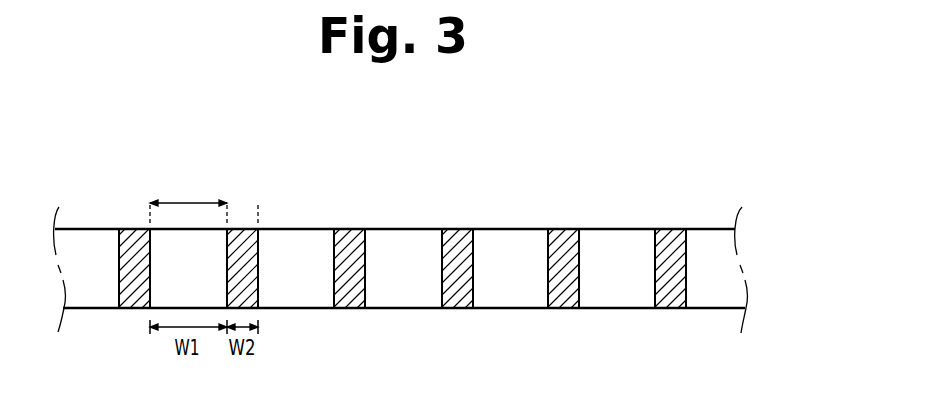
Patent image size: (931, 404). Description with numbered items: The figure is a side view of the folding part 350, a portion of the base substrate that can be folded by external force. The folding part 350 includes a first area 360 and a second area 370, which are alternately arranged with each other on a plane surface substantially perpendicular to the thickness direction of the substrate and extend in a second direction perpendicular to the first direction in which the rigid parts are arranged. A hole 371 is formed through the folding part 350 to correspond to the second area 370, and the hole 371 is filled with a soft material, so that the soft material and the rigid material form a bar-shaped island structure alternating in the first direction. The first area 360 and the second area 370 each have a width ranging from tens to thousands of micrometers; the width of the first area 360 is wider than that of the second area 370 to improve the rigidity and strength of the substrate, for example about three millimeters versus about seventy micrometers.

The folding part 350 is at (609, 170).
The first area 360 is at (188, 199).
The second area 370 is at (258, 203).
The hole 371 is at (362, 255).